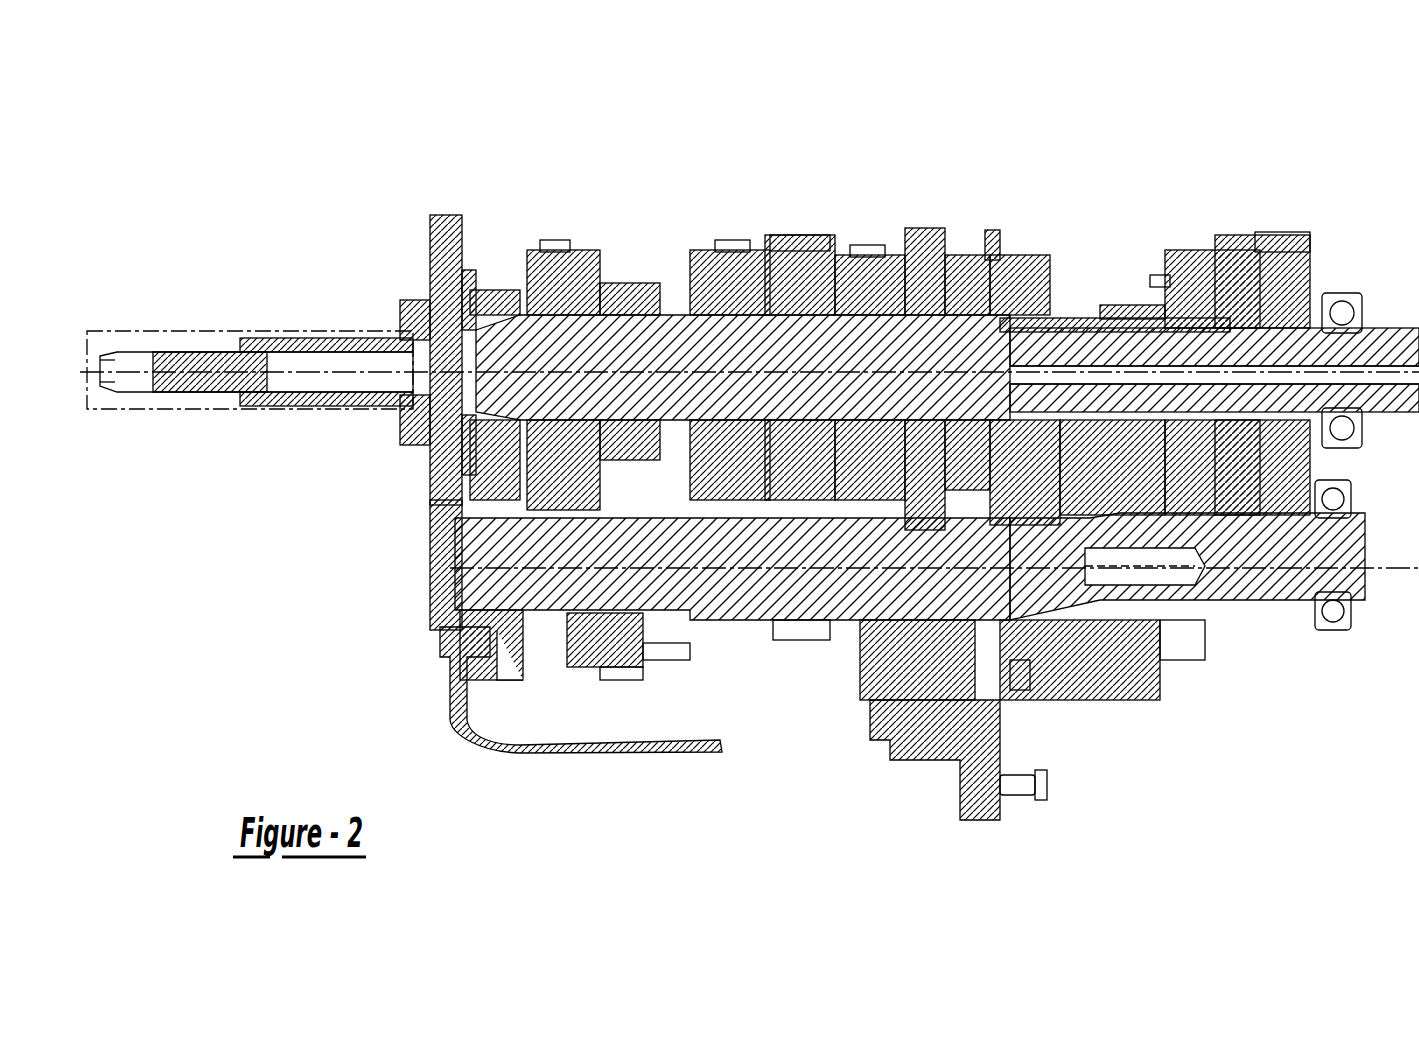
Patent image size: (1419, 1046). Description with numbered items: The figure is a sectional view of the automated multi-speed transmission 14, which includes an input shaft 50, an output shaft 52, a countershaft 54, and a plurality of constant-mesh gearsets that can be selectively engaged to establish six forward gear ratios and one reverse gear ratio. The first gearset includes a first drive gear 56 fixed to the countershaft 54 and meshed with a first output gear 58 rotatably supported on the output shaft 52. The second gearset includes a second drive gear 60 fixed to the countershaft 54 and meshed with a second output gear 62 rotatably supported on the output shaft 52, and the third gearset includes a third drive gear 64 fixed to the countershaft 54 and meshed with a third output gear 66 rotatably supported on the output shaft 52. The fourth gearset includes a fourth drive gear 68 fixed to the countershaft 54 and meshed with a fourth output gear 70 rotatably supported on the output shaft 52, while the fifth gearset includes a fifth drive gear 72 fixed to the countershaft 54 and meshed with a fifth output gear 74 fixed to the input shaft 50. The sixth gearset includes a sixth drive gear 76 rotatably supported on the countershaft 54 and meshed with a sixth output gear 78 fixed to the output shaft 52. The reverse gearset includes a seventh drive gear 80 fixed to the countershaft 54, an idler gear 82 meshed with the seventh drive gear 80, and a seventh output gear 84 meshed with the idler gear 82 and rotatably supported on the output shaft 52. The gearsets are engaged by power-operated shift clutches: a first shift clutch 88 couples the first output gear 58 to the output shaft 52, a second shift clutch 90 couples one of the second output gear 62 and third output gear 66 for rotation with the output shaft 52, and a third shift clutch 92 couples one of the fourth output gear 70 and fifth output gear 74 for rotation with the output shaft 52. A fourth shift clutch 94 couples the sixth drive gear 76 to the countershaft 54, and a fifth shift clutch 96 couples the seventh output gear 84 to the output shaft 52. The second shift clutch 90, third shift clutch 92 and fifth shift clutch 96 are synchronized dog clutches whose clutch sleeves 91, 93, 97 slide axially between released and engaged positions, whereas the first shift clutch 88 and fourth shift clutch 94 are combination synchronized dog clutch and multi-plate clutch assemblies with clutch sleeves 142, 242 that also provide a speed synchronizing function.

The automated transmission 14 is at (1100, 185).
The input shaft 50 is at (330, 388).
The output shaft 52 is at (1375, 332).
The countershaft 54 is at (730, 605).
The first drive gear 56 is at (1280, 625).
The first output gear 58 is at (1310, 216).
The second drive gear 60 is at (798, 640).
The second output gear 62 is at (800, 240).
The third drive gear 64 is at (660, 652).
The third output gear 66 is at (690, 280).
The fourth drive gear 68 is at (622, 678).
The fourth output gear 70 is at (630, 290).
The fifth drive gear 72 is at (512, 663).
The fifth output gear 74 is at (478, 300).
The sixth drive gear 76 is at (1166, 708).
The sixth output gear 78 is at (1125, 315).
The seventh drive gear 80 is at (870, 622).
The idler gear 82 is at (930, 740).
The seventh output gear 84 is at (945, 240).
The first shift clutch 88 is at (1196, 249).
The second shift clutch 90 is at (760, 224).
The clutch sleeve 91 is at (725, 250).
The third shift clutch 92 is at (552, 236).
The clutch sleeve 93 is at (585, 250).
The fourth shift clutch 94 is at (1068, 716).
The fifth shift clutch 96 is at (885, 260).
The clutch sleeve 97 is at (855, 255).
The clutch sleeve 142 is at (1162, 275).
The clutch sleeve 242 is at (1025, 690).